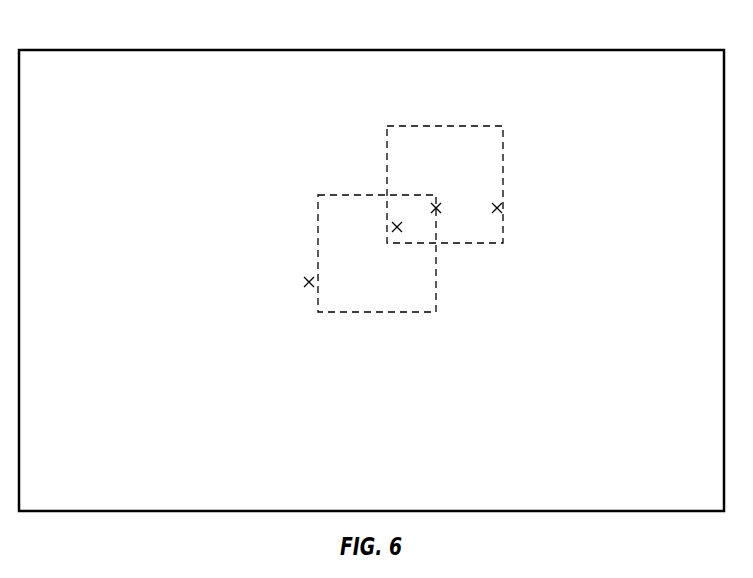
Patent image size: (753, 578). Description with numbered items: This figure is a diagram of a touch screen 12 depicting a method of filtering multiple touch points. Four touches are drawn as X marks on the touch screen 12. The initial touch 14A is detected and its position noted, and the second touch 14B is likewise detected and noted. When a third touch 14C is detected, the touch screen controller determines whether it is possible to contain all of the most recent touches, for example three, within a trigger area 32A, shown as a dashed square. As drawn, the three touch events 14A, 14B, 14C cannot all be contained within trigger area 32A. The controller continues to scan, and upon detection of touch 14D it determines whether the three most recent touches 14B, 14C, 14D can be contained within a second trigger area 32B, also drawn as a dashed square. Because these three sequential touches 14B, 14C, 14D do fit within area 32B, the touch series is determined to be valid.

The touch screen 12 is at (131, 153).
The trigger area 32A is at (335, 192).
The trigger area 32B is at (432, 125).
The initial touch 14A is at (305, 286).
The second touch 14B is at (395, 233).
The third touch 14C is at (436, 214).
The touch 14D is at (499, 214).